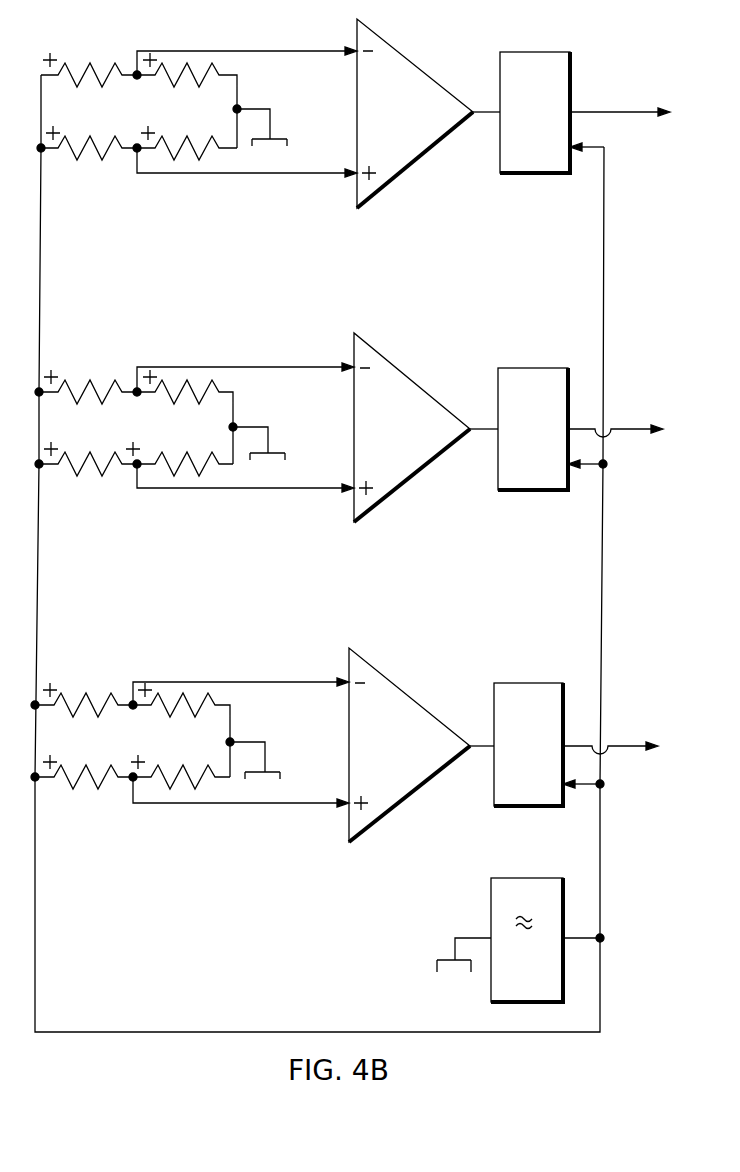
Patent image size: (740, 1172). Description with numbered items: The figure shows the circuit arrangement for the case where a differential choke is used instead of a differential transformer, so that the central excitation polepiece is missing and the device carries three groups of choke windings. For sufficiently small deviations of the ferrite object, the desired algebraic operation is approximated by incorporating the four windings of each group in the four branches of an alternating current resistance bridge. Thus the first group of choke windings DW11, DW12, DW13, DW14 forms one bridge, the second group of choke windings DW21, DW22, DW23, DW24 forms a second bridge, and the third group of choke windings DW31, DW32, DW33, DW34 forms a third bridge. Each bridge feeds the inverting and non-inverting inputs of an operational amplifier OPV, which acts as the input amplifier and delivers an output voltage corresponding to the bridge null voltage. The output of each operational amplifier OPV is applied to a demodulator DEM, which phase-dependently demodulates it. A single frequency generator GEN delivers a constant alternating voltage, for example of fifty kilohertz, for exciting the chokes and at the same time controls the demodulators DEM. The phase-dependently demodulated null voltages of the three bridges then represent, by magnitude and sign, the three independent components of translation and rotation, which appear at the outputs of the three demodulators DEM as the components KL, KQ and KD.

The choke winding DW11 is at (187, 82).
The choke winding DW12 is at (89, 168).
The choke winding DW13 is at (187, 168).
The choke winding DW14 is at (89, 52).
The choke winding DW21 is at (88, 369).
The choke winding DW22 is at (185, 399).
The choke winding DW23 is at (88, 485).
The choke winding DW24 is at (179, 485).
The choke winding DW31 is at (84, 683).
The choke winding DW32 is at (181, 713).
The choke winding DW33 is at (180, 799).
The choke winding DW34 is at (84, 799).
The operational amplifier OPV is at (411, 430).
The demodulator DEM is at (520, 429).
The frequency generator GEN is at (520, 940).
The component K_L KL is at (620, 97).
The component K_Q KQ is at (615, 415).
The component K_D KD is at (612, 733).